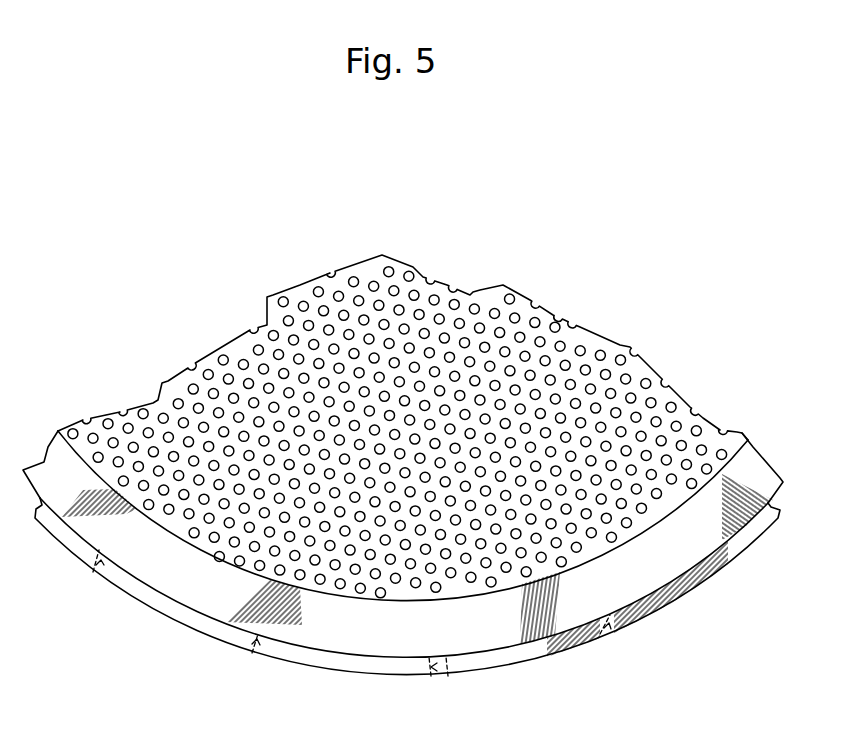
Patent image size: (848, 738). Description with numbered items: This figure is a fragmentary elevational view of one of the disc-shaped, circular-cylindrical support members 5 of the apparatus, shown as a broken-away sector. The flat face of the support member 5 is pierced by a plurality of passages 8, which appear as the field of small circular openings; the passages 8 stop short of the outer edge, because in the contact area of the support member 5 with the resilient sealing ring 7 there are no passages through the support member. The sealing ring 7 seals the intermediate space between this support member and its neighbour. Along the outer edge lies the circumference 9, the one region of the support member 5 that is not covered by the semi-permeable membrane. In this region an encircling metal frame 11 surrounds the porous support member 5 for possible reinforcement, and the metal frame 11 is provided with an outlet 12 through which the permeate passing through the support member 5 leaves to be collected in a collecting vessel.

The support member 5 is at (543, 279).
The sealing ring 7 is at (752, 445).
The passages 8 is at (329, 270).
The circumference 9 is at (168, 599).
The metal frame 11 is at (308, 660).
The outlet 12 is at (93, 572).